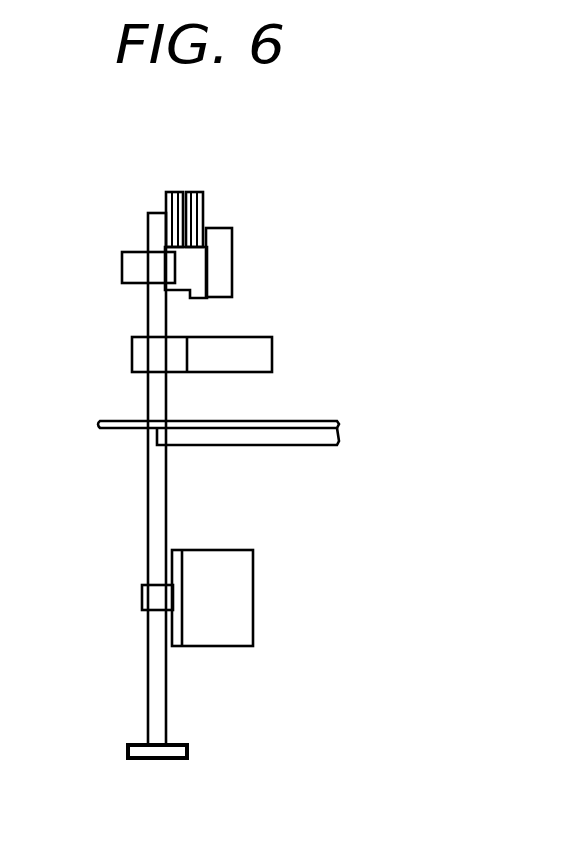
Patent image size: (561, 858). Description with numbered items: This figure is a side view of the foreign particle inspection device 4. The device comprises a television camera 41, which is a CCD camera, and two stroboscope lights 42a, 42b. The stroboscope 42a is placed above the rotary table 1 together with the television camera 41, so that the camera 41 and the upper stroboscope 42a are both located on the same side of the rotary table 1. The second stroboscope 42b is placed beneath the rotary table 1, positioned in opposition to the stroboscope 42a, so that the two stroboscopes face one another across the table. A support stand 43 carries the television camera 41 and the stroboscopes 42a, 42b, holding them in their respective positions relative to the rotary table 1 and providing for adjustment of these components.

The foreign particle inspection device 4 is at (124, 352).
The television camera 41 is at (233, 255).
The stroboscope 42a is at (250, 336).
The stroboscope 42b is at (253, 600).
The support stand 43 is at (155, 514).
The rotary table 1 is at (316, 421).